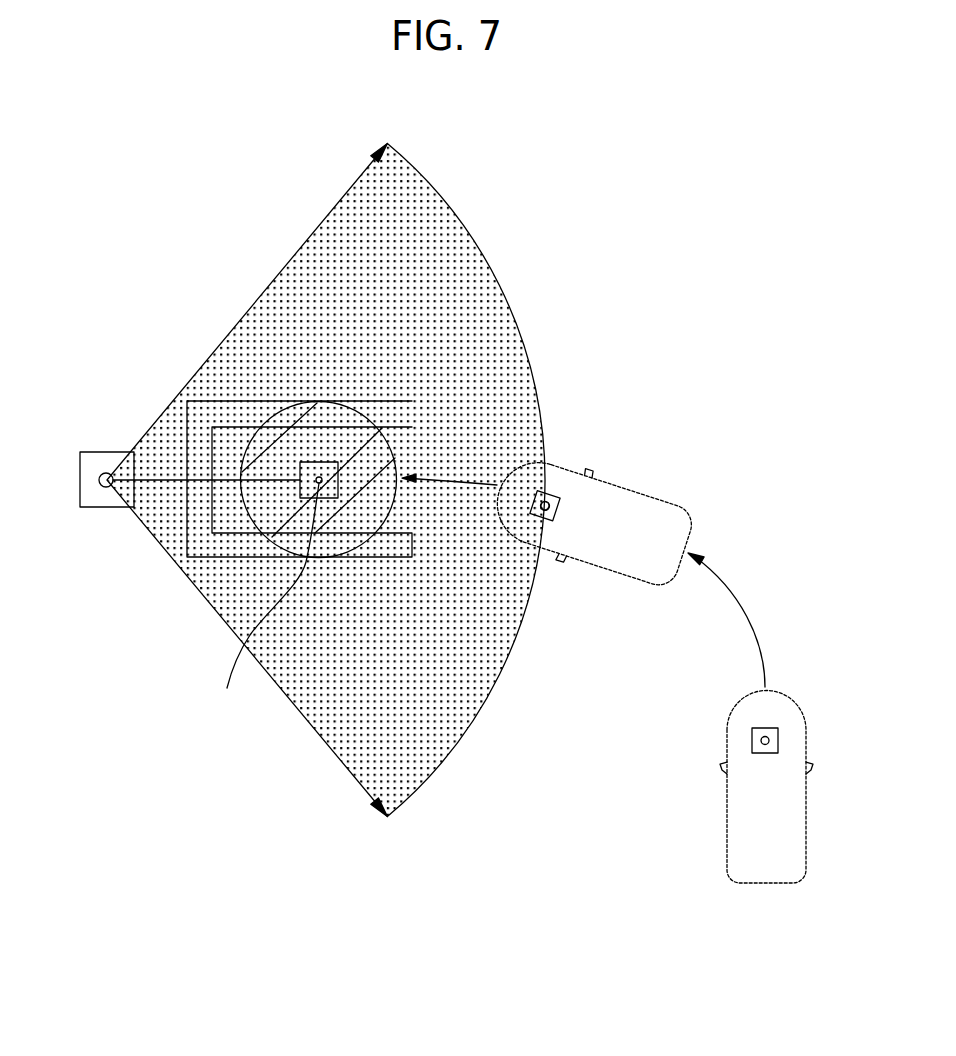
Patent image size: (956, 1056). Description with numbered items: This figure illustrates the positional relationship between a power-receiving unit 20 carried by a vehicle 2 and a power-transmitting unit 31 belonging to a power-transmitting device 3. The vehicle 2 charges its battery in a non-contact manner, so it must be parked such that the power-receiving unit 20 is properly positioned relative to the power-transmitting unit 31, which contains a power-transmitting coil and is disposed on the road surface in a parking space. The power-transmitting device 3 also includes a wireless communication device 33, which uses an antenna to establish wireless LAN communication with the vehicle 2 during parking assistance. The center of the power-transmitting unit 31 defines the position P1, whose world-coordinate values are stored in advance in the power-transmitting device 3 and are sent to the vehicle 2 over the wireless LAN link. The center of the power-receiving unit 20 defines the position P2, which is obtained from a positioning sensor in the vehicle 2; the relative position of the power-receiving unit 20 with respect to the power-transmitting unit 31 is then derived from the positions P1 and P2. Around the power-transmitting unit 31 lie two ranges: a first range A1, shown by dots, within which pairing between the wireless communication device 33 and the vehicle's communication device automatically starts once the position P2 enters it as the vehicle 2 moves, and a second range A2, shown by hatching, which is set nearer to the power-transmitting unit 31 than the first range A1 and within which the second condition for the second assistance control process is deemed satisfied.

The vehicle 2 is at (685, 504).
The power-receiving unit 20 is at (559, 506).
The power-transmitting device 3 is at (99, 438).
The wireless communication device 33 is at (108, 487).
The power-transmitting unit 31 is at (265, 604).
The first range A1 is at (540, 328).
The second range A2 is at (322, 390).
The position of the power-transmitting unit P1 is at (319, 477).
The position of the power-receiving unit P2 is at (547, 493).